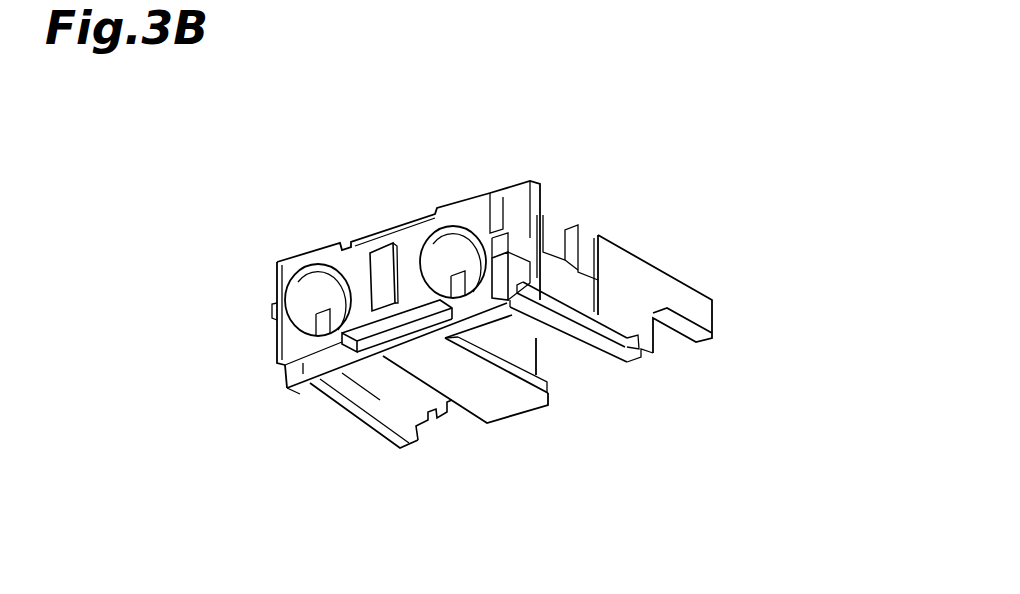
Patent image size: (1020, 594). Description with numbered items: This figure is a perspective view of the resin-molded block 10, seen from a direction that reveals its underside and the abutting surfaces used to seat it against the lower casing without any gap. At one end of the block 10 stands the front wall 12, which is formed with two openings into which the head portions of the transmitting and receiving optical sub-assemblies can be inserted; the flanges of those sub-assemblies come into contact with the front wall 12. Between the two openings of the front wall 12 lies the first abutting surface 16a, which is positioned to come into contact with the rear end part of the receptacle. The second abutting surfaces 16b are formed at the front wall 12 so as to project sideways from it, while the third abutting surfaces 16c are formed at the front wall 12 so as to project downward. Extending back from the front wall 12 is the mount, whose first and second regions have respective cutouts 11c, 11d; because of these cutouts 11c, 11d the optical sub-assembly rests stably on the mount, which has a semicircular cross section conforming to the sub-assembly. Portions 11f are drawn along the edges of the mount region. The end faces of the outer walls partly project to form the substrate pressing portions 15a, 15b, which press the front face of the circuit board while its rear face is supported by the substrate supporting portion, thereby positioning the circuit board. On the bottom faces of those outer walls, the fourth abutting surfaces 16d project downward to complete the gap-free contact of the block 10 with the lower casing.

The block 10 is at (763, 183).
The front wall 12 is at (518, 195).
The first abutting surface 16a is at (380, 258).
The second abutting surfaces 16b is at (277, 313).
The third abutting surfaces 16c is at (368, 387).
The fourth abutting surfaces 16d is at (643, 358).
The cutout 11c is at (381, 388).
The cutout 11d is at (578, 382).
The rim 11f is at (363, 418).
The substrate pressing portion 15a is at (442, 425).
The substrate pressing portion 15b is at (700, 315).